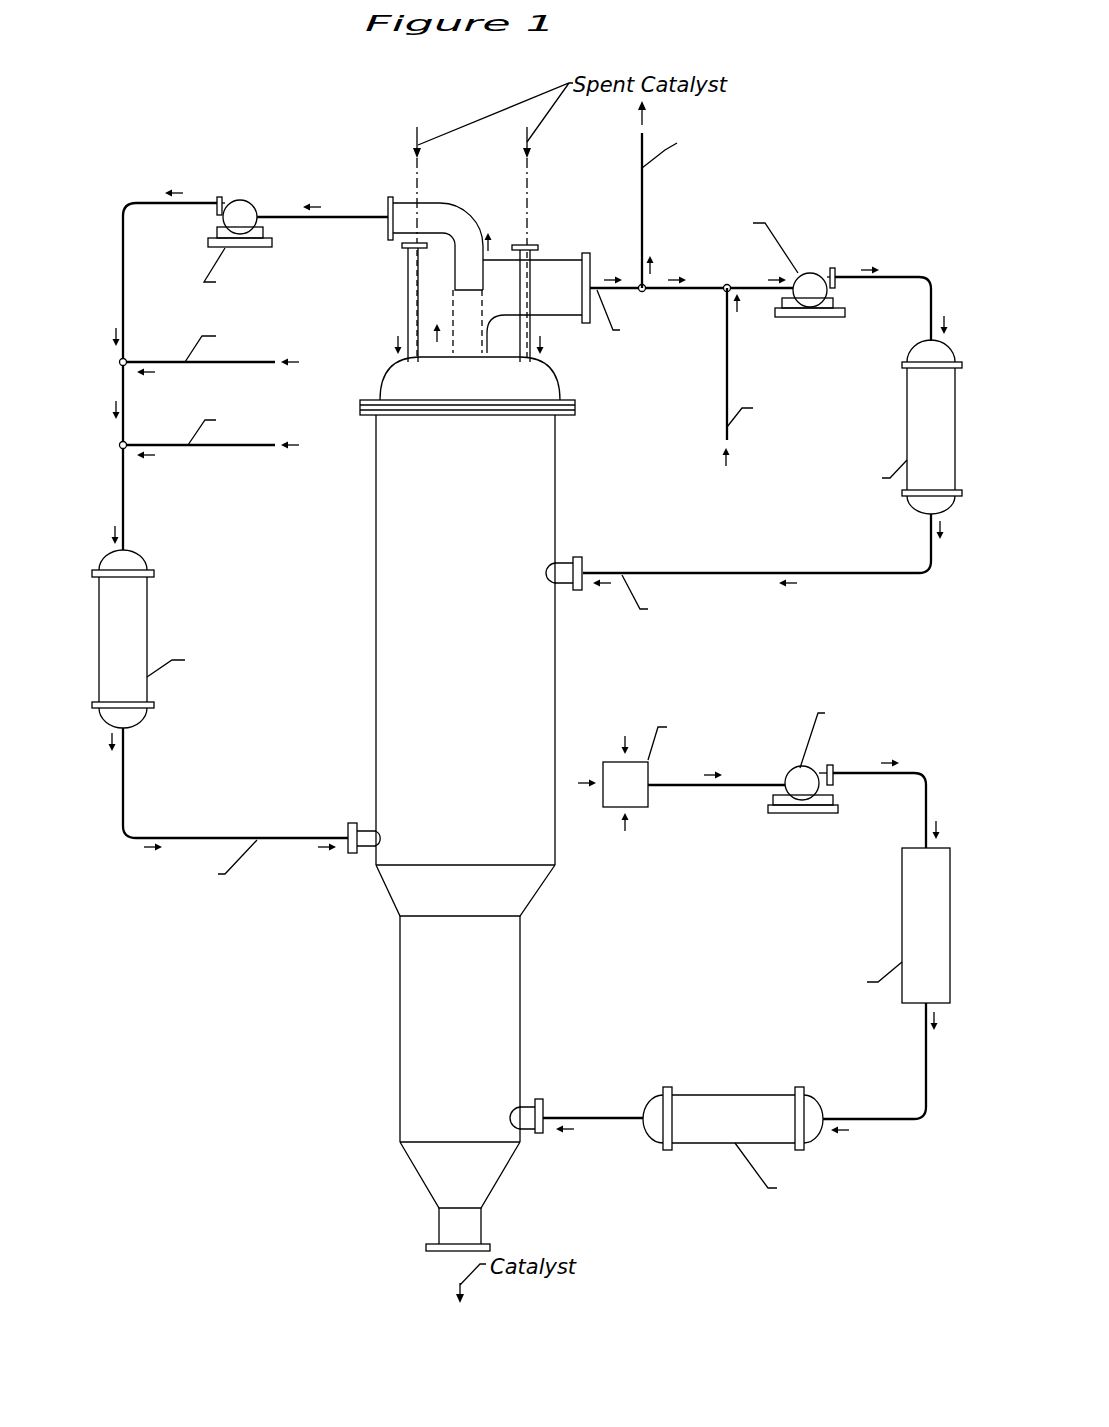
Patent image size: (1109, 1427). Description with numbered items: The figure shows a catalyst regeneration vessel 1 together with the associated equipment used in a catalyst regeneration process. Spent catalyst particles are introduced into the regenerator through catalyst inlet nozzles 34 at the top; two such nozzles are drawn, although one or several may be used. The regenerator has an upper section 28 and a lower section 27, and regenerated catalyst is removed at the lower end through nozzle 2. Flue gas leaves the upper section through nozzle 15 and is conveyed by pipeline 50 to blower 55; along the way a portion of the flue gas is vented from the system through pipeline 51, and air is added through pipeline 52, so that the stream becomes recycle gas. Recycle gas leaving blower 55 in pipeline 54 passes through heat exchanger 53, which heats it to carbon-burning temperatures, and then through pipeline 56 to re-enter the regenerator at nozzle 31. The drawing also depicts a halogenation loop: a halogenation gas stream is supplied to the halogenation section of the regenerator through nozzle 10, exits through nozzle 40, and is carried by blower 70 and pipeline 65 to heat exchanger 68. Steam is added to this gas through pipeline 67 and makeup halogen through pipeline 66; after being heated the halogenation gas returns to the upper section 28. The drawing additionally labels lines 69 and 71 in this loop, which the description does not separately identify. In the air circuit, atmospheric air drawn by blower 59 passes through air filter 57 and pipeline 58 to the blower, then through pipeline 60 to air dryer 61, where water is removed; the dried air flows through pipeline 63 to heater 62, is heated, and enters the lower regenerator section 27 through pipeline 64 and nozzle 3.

The regeneration vessel 1 is at (465, 804).
The nozzle 2 is at (439, 1225).
The nozzle 3 is at (539, 1096).
The nozzle 10 is at (357, 853).
The nozzle 15 is at (590, 253).
The lower section 27 is at (520, 1019).
The upper section 28 is at (376, 622).
The nozzle 31 is at (573, 557).
The catalyst inlet nozzles 34 is at (408, 272).
The nozzle 40 is at (430, 203).
The pipeline 50 is at (763, 285).
The pipeline 51 is at (642, 198).
The pipeline 52 is at (727, 370).
The heat exchanger 53 is at (907, 388).
The pipeline 54 is at (929, 320).
The blower 55 is at (813, 270).
The pipeline 56 is at (722, 573).
The air filter 57 is at (642, 807).
The pipeline 58 is at (678, 785).
The blower 59 is at (813, 768).
The pipeline 60 is at (926, 808).
The air dryer 61 is at (902, 870).
The heater 62 is at (718, 1095).
The pipeline 63 is at (848, 1120).
The pipeline 64 is at (595, 1122).
The pipeline 65 is at (142, 207).
The pipeline 66 is at (247, 364).
The pipeline 67 is at (247, 447).
The heat exchanger 68 is at (147, 620).
The halogen feed line 69 is at (180, 838).
The blower 70 is at (240, 200).
The blower discharge line 71 is at (337, 218).